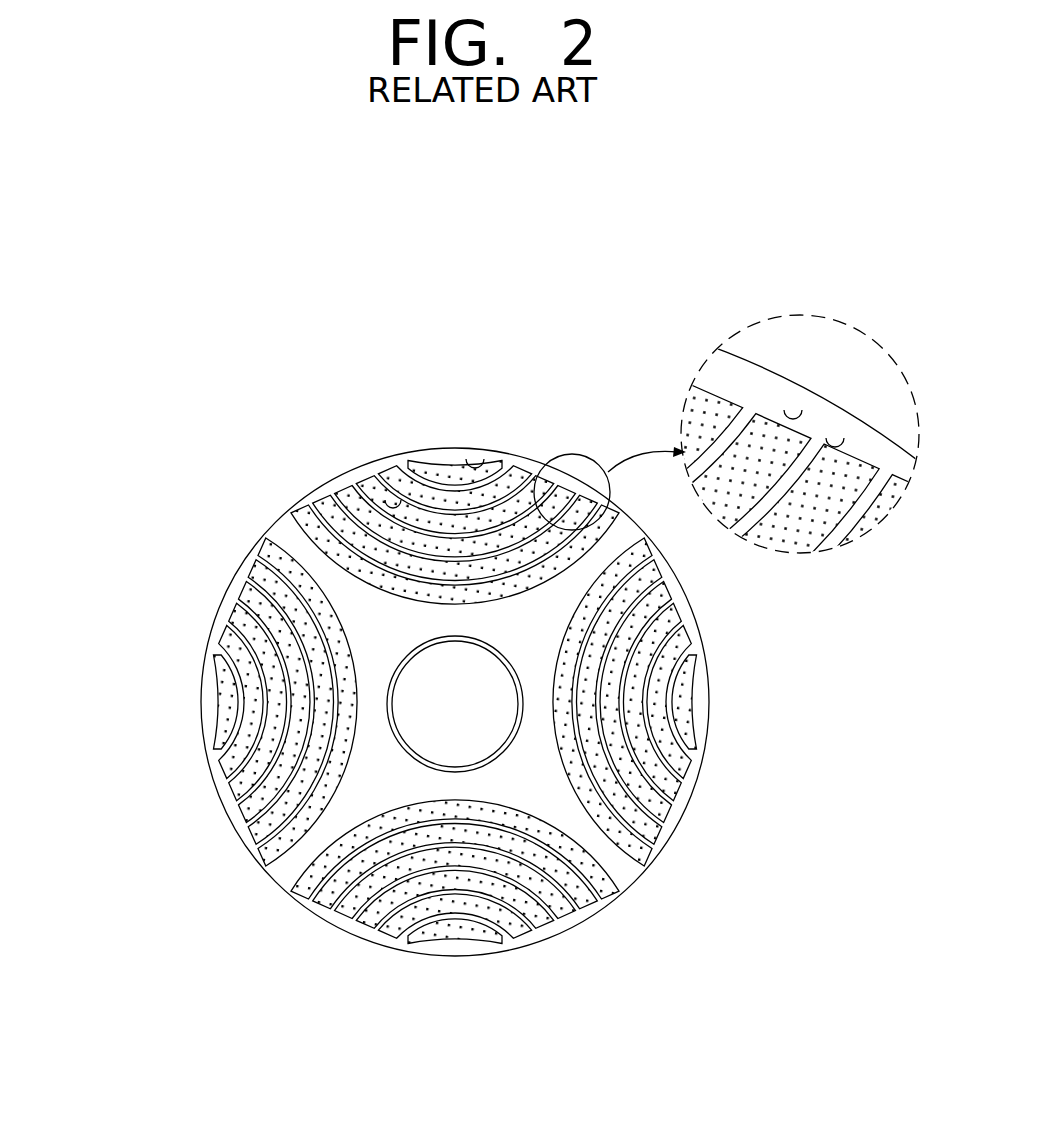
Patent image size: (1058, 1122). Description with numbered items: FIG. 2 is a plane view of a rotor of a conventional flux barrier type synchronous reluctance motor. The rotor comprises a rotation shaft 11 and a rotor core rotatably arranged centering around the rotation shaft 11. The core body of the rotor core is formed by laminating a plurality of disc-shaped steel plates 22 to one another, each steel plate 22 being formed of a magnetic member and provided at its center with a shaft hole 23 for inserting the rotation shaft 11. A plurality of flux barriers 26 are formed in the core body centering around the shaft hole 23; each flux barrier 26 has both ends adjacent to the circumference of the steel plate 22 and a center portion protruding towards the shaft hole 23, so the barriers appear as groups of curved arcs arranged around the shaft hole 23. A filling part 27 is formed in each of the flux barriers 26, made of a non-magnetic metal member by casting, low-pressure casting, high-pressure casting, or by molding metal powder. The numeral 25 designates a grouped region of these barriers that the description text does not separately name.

The rotation shaft 11 is at (423, 737).
The steel plate 22 is at (268, 518).
The shaft hole 23 is at (388, 698).
The stator pole 25 is at (388, 337).
The flux barrier 26 is at (413, 505).
The filling part 27 is at (652, 830).